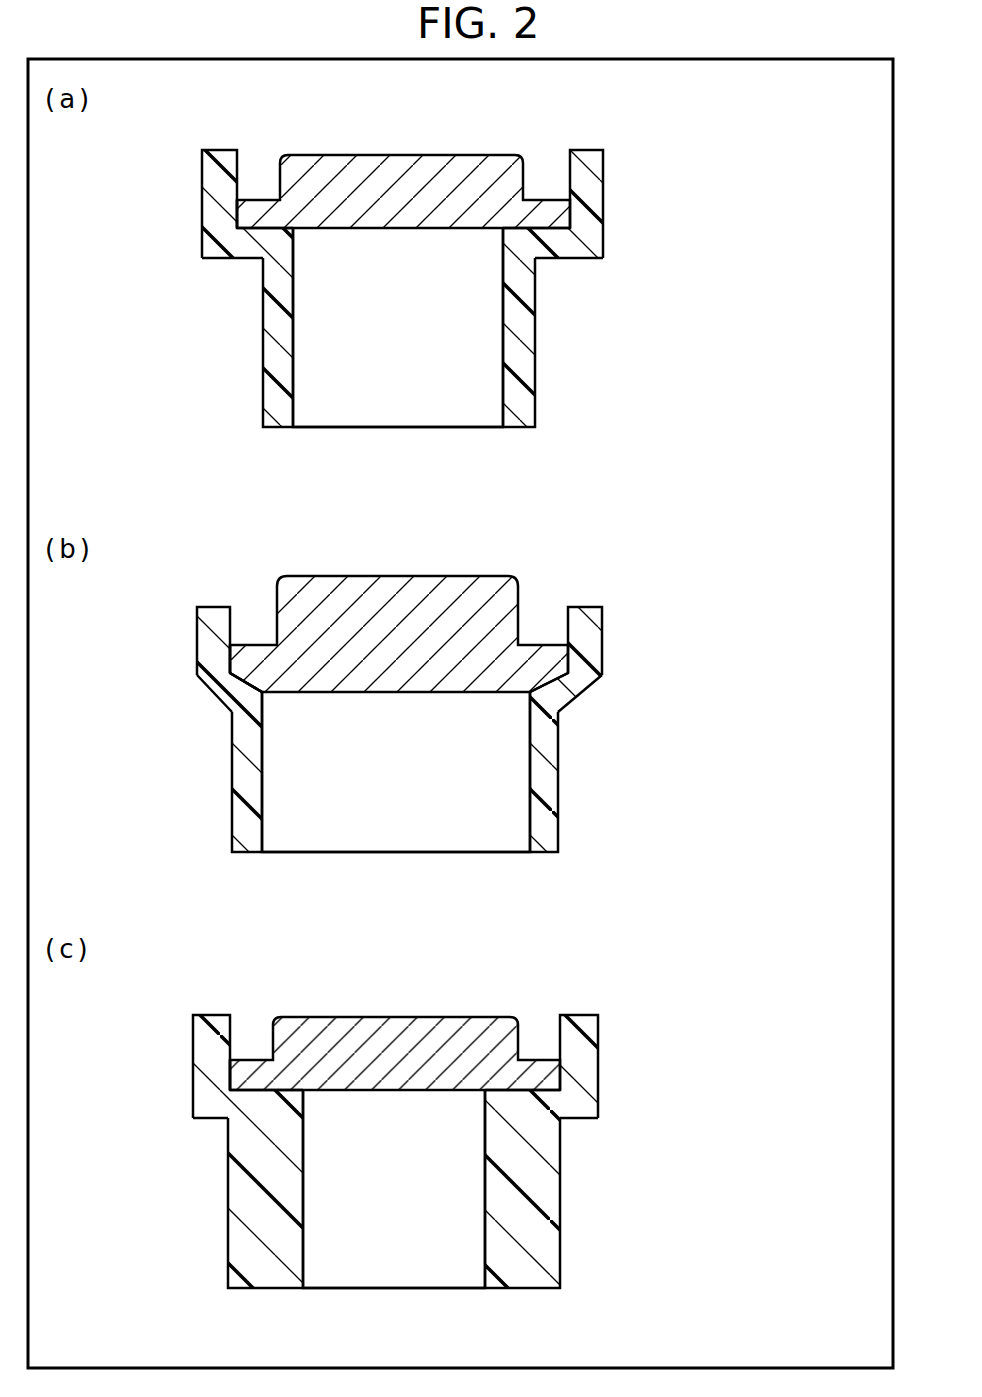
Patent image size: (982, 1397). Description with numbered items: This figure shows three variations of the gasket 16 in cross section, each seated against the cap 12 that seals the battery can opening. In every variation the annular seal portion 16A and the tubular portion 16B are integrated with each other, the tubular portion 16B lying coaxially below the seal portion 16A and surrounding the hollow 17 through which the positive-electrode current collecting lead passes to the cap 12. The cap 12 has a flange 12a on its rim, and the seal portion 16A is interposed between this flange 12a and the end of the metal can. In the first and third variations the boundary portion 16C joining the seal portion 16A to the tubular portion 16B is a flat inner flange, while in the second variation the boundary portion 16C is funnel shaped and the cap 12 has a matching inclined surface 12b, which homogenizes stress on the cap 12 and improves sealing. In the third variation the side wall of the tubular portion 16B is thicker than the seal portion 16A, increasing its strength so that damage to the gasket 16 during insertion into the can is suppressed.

The cap 12 is at (413, 178).
The flange 12a is at (253, 213).
The inclined surface 12b is at (243, 687).
The gasket 16 is at (695, 180).
The annular seal portion 16A is at (578, 202).
The tubular portion 16B is at (525, 332).
The boundary portion 16C is at (562, 258).
The hollow 17 is at (451, 403).